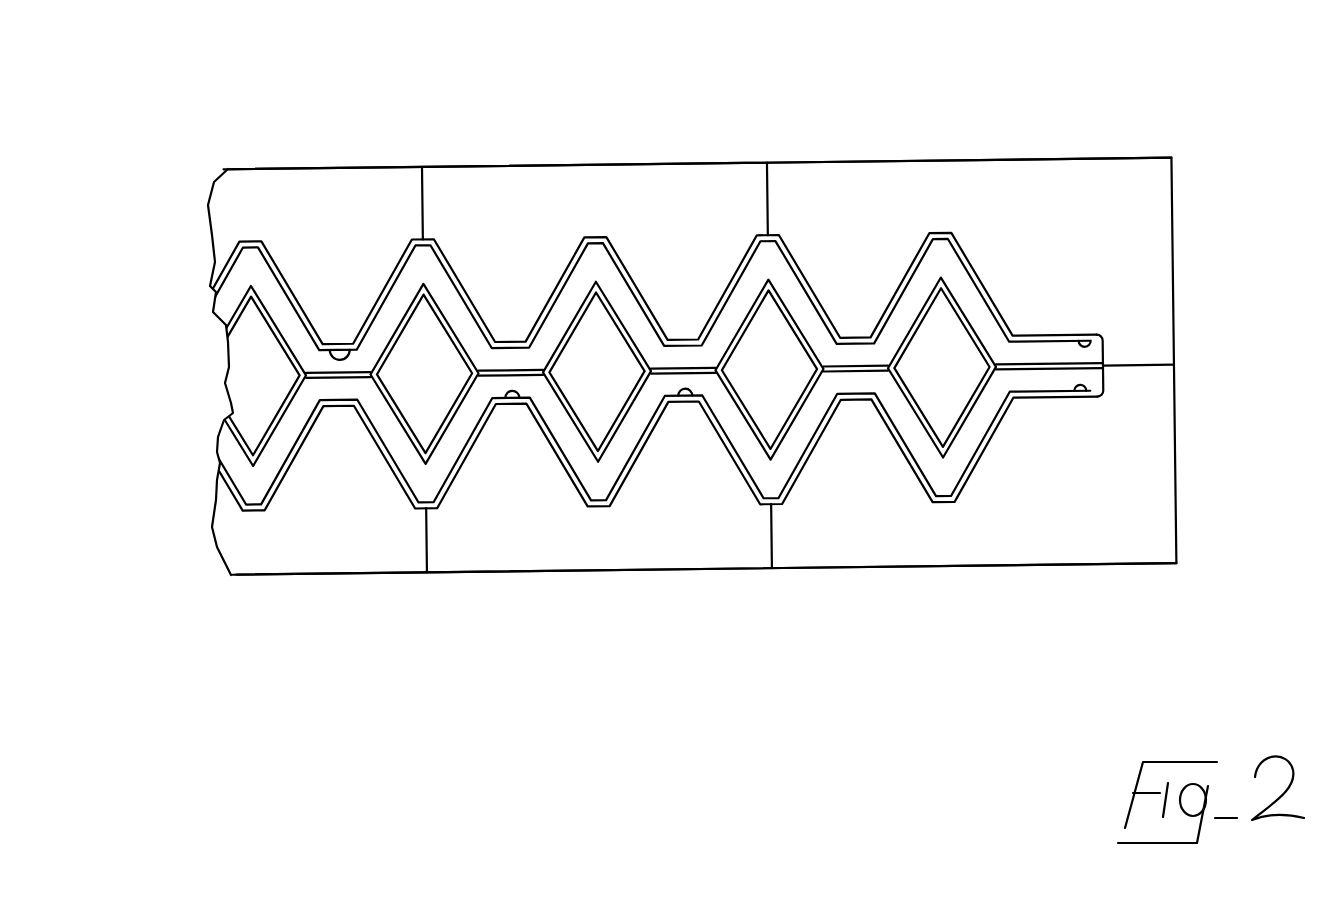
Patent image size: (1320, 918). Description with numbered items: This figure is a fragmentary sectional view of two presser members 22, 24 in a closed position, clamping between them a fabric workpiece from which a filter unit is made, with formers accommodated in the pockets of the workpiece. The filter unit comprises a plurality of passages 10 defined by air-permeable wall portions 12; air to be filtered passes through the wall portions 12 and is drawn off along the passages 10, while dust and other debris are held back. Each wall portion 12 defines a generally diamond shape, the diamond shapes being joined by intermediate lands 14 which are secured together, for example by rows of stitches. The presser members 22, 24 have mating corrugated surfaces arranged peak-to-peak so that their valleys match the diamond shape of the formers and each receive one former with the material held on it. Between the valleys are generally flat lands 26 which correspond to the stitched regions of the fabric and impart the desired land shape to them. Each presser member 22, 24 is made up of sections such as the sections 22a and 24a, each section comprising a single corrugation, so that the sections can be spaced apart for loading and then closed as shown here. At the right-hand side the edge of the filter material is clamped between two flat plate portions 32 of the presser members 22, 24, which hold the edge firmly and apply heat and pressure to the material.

The passage 10 is at (578, 430).
The air-permeable wall portion 12 is at (557, 420).
The intermediate land 14 is at (337, 407).
The presser member 22 is at (192, 187).
The presser member section 22a is at (333, 193).
The presser member 24 is at (183, 527).
The presser member section 24a is at (345, 550).
The land 26 is at (345, 352).
The flat plate portion 32 is at (1092, 341).